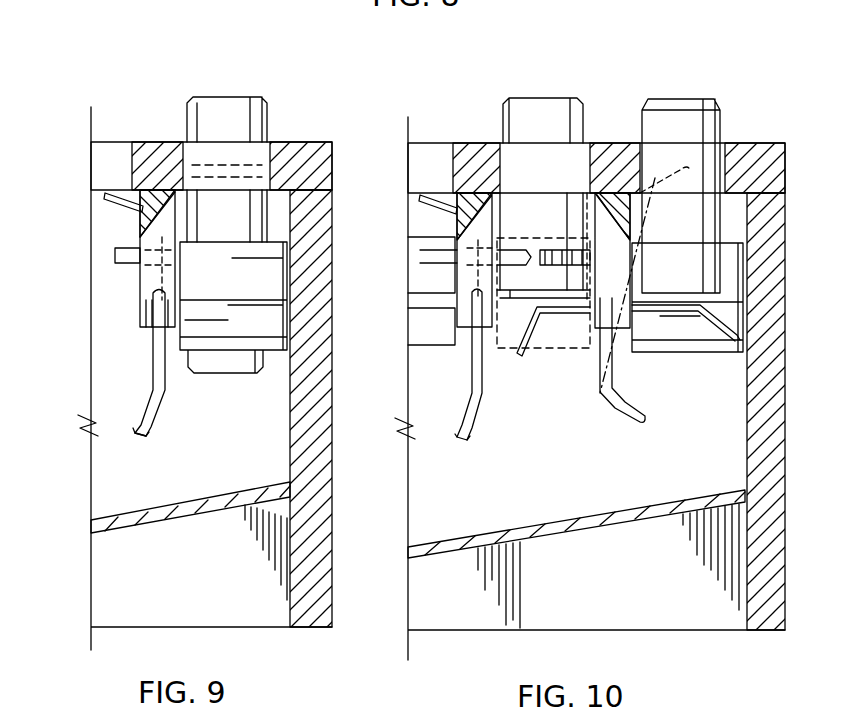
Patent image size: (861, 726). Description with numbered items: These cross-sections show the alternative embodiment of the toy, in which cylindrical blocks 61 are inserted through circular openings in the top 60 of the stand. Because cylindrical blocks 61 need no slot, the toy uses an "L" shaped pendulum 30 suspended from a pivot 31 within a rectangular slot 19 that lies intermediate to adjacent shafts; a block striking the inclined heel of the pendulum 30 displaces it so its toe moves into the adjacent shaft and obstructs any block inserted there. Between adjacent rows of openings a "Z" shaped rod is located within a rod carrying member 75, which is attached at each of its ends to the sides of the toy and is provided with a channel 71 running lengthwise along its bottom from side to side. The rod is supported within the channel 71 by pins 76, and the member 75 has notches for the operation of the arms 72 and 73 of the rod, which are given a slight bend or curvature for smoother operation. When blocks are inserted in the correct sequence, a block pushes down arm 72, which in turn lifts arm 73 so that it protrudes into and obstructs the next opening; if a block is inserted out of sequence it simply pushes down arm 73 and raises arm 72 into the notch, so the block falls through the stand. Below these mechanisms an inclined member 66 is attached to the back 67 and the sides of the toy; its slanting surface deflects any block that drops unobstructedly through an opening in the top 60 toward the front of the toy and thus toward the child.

In FIG. 10, the rectangular slot 19 is at (500, 205).
In FIG. 10, the "L" shaped pendulum 30 is at (728, 275).
In FIG. 10, the pivot 31 is at (565, 252).
In FIG. 9, the top plate 60 is at (297, 142).
In FIG. 10, the top plate 60 is at (755, 143).
In FIG. 10, the cylindrical block 61 is at (540, 105).
In FIG. 9, the inclined member 66 is at (254, 495).
In FIG. 10, the inclined member 66 is at (714, 497).
In FIG. 9, the back 67 is at (310, 318).
In FIG. 10, the back 67 is at (770, 333).
In FIG. 9, the channel 71 is at (152, 362).
In FIG. 10, the channel 71 is at (625, 345).
In FIG. 9, the arm 72 is at (150, 430).
In FIG. 10, the arm 72 is at (468, 440).
In FIG. 9, the arm 73 is at (103, 201).
In FIG. 10, the arm 73 is at (418, 202).
In FIG. 9, the rod carrying member 75 is at (143, 278).
In FIG. 10, the rod carrying member 75 is at (465, 330).
In FIG. 9, the pin 76 is at (140, 315).
In FIG. 10, the pin 76 is at (505, 318).